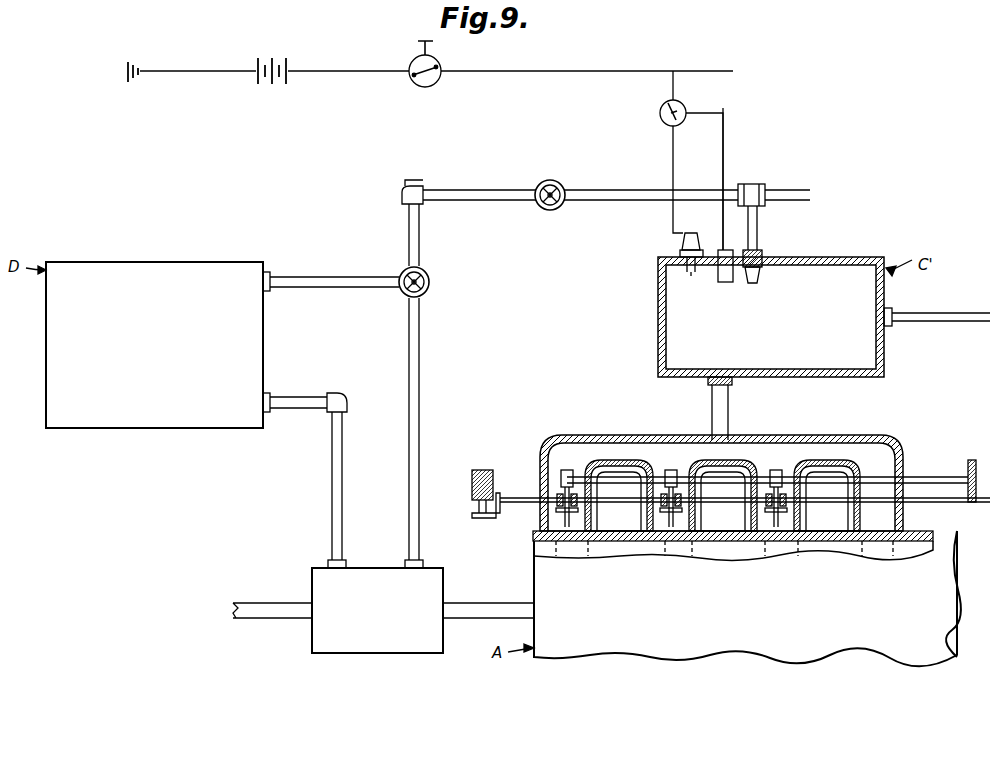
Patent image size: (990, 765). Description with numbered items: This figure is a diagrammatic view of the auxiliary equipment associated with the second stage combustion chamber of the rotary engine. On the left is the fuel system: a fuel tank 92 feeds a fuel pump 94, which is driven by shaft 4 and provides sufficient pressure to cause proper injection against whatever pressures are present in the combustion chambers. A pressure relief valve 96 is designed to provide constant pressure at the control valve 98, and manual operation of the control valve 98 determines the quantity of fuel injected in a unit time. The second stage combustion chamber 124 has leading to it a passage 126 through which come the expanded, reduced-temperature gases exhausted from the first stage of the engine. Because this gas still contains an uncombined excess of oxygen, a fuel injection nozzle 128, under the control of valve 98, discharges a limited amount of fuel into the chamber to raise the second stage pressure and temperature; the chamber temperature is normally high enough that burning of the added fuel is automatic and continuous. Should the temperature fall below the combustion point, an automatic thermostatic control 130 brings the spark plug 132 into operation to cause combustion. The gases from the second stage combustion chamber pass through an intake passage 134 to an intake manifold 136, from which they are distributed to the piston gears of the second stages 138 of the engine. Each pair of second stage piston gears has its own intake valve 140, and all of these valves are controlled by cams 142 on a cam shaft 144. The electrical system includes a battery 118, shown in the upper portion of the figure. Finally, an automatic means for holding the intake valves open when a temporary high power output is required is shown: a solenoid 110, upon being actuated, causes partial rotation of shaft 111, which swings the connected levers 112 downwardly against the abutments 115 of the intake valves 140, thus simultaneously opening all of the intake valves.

The shaft 4 is at (284, 611).
The fuel tank 92 is at (242, 268).
The fuel pump 94 is at (432, 581).
The pressure relief valve 96 is at (397, 291).
The control valve 98 is at (558, 208).
The solenoid 110 is at (478, 478).
The shaft 111 is at (514, 490).
The levers 112 is at (580, 507).
The abutments 115 is at (558, 512).
The battery 118 is at (258, 69).
The second stage combustion chamber 124 is at (857, 350).
The passage 126 is at (945, 312).
The fuel injection nozzle 128 is at (760, 272).
The automatic thermostatic control 130 is at (727, 262).
The spark plug 132 is at (688, 262).
The intake passage 134 is at (722, 401).
The intake manifold 136 is at (806, 439).
The second stages 138 is at (665, 556).
The intake valve 140 is at (668, 538).
The cams 142 is at (583, 472).
The cam shaft 144 is at (922, 480).